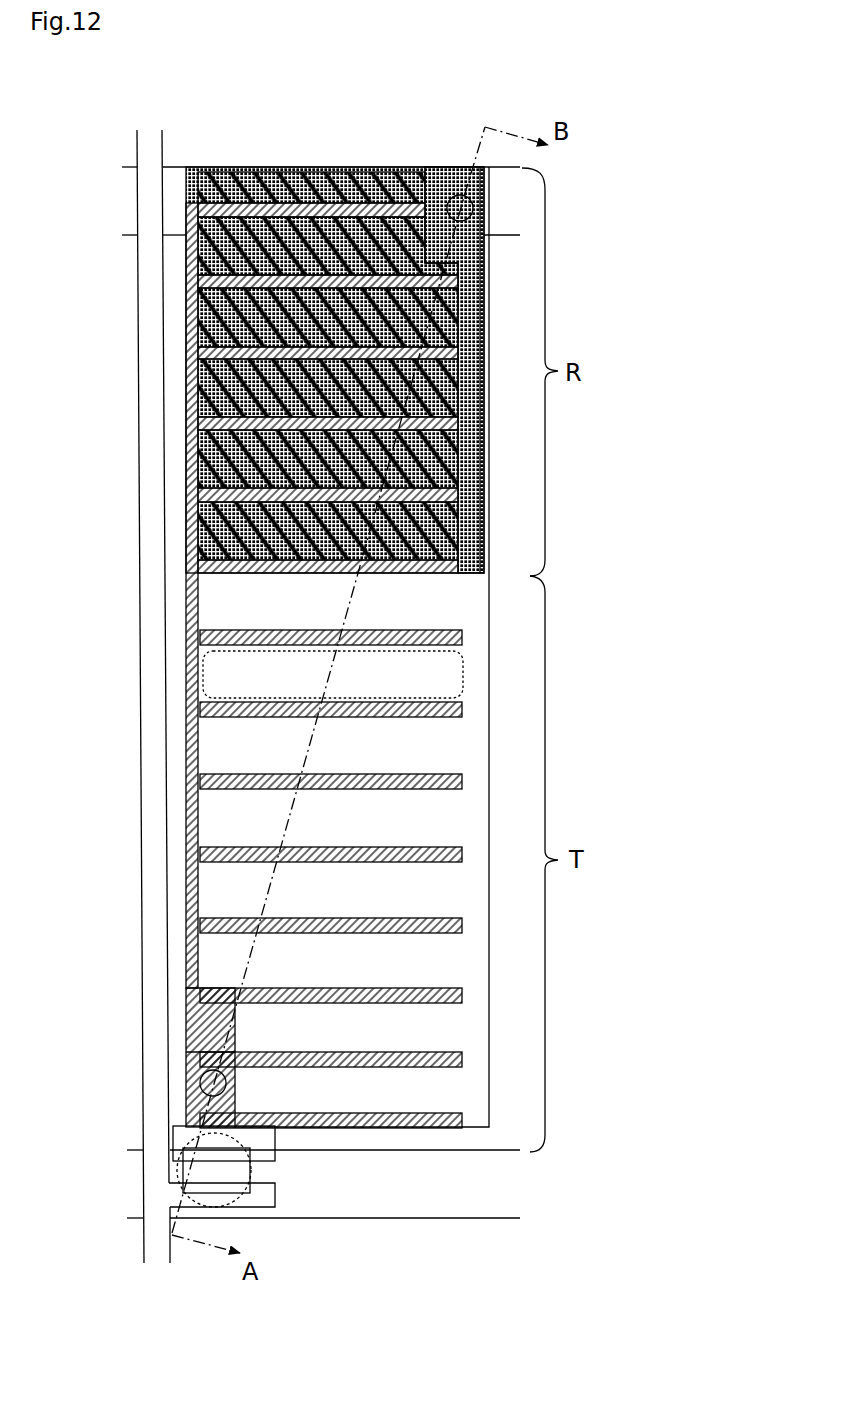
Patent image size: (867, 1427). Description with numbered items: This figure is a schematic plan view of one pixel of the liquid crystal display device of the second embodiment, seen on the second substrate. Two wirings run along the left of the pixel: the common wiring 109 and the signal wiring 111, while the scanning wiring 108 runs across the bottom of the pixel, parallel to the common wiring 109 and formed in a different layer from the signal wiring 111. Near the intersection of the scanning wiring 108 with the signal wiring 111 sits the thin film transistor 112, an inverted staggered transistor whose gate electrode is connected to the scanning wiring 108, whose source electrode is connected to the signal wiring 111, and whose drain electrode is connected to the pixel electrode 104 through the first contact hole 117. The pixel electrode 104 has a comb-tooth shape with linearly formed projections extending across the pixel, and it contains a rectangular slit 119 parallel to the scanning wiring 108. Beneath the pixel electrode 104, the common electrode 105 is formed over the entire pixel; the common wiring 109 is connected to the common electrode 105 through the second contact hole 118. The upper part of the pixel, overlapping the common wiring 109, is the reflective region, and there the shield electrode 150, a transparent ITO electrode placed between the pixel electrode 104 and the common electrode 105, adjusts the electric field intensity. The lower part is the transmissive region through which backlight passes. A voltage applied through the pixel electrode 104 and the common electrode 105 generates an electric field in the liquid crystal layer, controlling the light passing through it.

The common wiring 109 is at (133, 190).
The signal wiring 111 is at (148, 355).
The shield electrode 150 is at (308, 190).
The second contact hole 118 is at (473, 207).
The rectangular slit 119 is at (468, 670).
The pixel electrode 104 is at (190, 703).
The common electrode 105 is at (475, 805).
The first contact hole 117 is at (190, 1076).
The scanning wiring 108 is at (133, 1176).
The thin film transistor 112 is at (253, 1170).